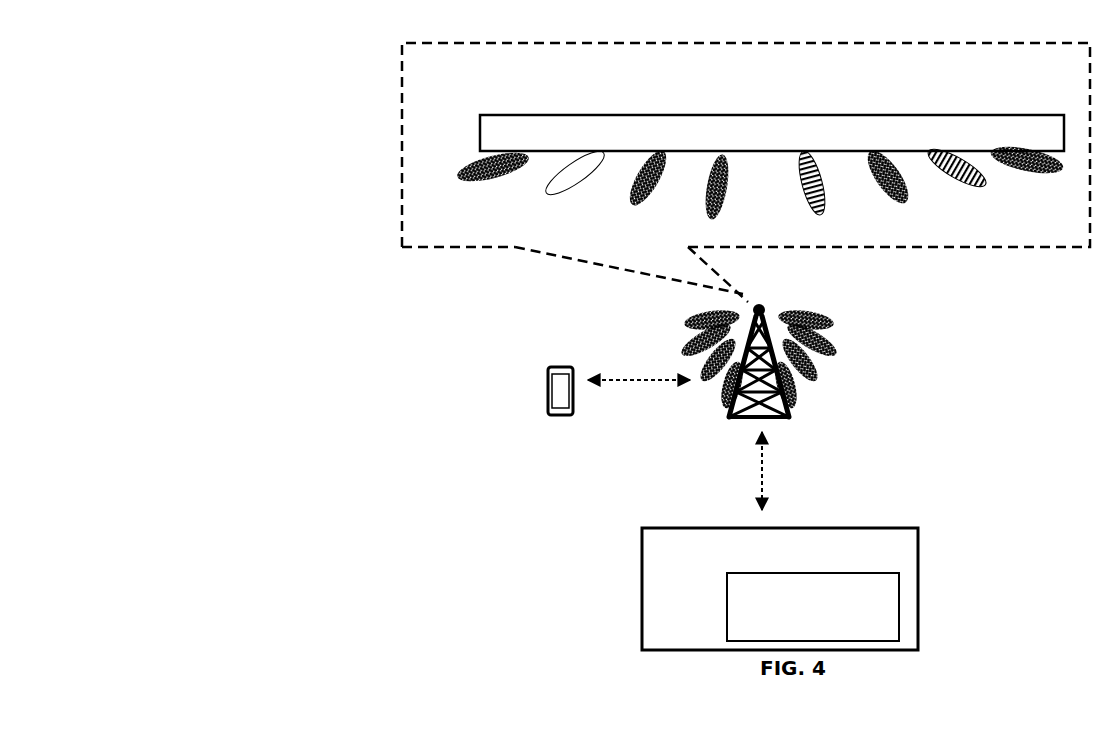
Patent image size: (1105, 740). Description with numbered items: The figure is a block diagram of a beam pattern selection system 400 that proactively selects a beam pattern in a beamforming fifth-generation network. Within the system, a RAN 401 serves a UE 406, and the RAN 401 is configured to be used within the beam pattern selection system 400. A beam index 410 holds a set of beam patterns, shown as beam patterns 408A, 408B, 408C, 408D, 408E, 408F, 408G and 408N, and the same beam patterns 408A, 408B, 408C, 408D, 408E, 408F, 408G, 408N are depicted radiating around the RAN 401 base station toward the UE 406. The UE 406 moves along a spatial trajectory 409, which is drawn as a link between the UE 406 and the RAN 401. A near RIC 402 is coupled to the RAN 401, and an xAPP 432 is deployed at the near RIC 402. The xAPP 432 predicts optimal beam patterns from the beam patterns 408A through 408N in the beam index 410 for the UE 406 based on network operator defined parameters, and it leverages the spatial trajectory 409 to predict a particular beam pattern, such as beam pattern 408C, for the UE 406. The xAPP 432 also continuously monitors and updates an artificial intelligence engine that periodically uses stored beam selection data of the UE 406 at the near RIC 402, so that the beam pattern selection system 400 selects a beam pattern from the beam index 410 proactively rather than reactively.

The beam pattern selection system 400 is at (240, 103).
The RAN 401 is at (1007, 330).
The near RIC 402 is at (780, 589).
The UE 406 is at (548, 369).
The beam pattern 408A is at (597, 231).
The beam pattern 408B is at (638, 245).
The beam pattern 408C is at (682, 257).
The beam pattern 408D is at (725, 270).
The beam pattern 408E is at (800, 270).
The beam pattern 408F is at (846, 257).
The beam pattern 408G is at (886, 245).
The beam pattern 408N is at (921, 231).
The spatial trajectory 409 is at (652, 379).
The beam index 410 is at (490, 115).
The xAPP 432 is at (813, 607).